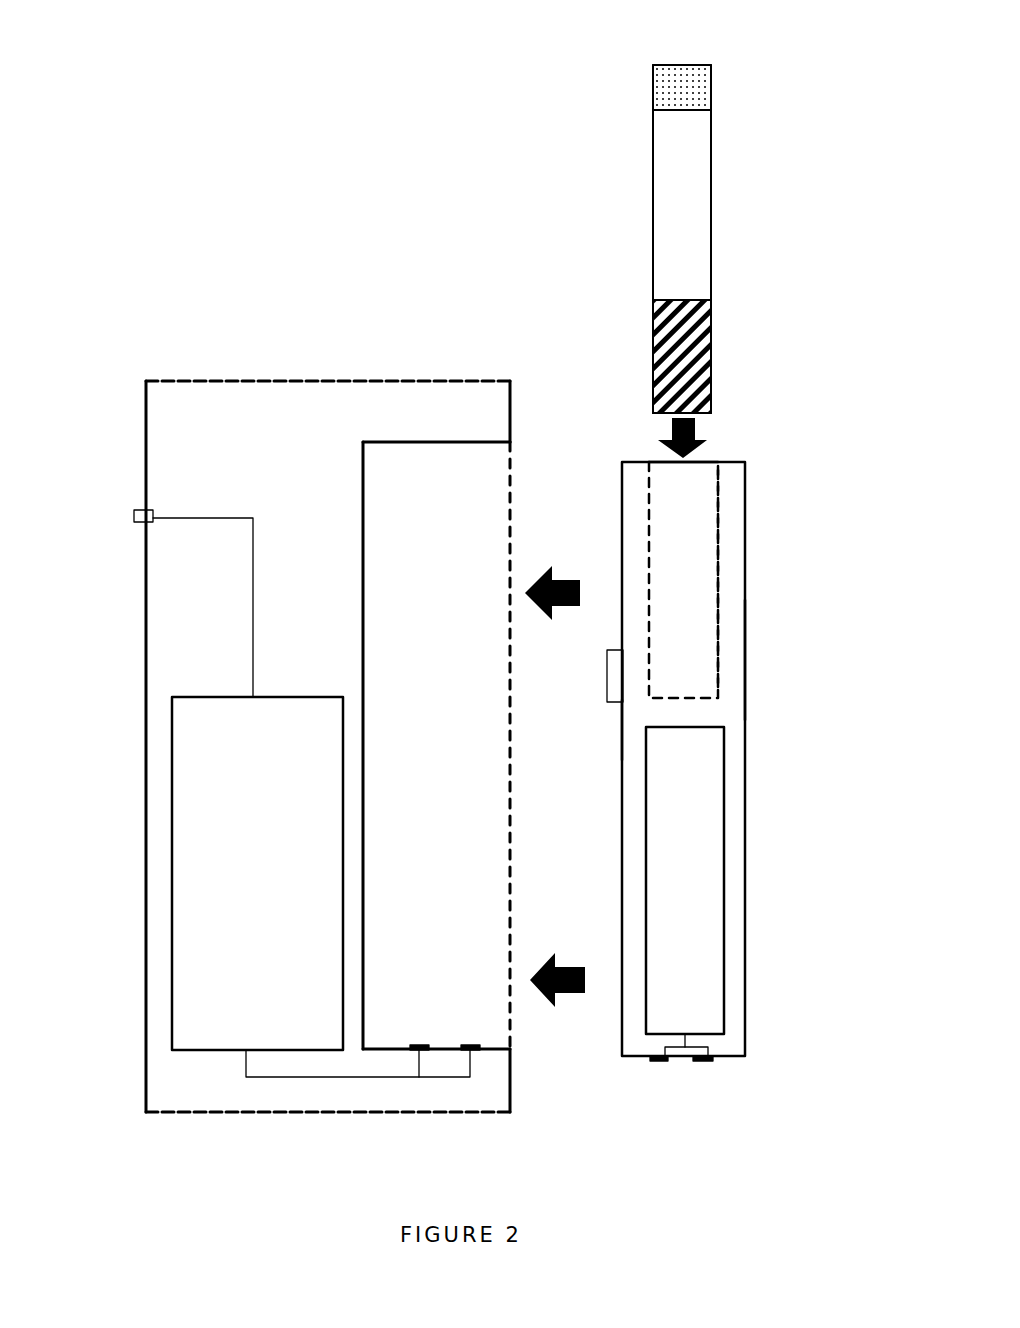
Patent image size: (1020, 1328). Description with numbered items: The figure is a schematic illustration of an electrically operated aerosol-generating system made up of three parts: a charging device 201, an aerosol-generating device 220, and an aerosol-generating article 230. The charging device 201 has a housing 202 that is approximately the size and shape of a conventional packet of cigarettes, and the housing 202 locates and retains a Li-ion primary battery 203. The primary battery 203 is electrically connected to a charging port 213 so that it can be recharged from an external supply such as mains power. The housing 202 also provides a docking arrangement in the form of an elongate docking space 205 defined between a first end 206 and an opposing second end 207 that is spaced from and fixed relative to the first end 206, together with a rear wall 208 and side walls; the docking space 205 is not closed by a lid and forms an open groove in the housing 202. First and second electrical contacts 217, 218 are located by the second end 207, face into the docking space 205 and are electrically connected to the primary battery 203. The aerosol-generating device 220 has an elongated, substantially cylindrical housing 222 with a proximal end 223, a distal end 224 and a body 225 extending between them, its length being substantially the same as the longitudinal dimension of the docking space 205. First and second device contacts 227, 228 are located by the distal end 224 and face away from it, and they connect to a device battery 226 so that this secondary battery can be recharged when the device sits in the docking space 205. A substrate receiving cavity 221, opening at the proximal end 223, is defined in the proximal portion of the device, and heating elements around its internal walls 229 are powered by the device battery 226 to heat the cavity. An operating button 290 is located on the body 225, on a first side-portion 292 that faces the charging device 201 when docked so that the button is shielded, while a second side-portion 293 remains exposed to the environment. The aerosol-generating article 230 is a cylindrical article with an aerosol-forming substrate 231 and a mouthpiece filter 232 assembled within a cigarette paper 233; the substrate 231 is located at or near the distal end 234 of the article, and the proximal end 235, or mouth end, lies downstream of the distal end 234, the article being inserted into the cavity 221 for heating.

The charging device 201 is at (138, 370).
The housing 202 is at (146, 406).
The primary battery 203 is at (257, 873).
The docking space 205 is at (436, 745).
The first end 206 is at (487, 446).
The second end 207 is at (502, 1050).
The rear wall 208 is at (363, 552).
The charging port 213 is at (136, 521).
The first electrical contact 217 is at (419, 1045).
The second electrical contact 218 is at (467, 1045).
The aerosol-generating device 220 is at (814, 484).
The substrate receiving cavity 221 is at (698, 554).
The elongated housing 222 is at (745, 944).
The proximal end 223 is at (739, 462).
The distal end 224 is at (732, 1058).
The body 225 is at (724, 710).
The device battery 226 is at (695, 817).
The first device contact 227 is at (654, 1066).
The second device contact 228 is at (705, 1066).
The internal walls 229 is at (721, 616).
The aerosol-generating article 230 is at (768, 99).
The aerosol-forming substrate 231 is at (711, 334).
The mouthpiece filter 232 is at (653, 92).
The cigarette paper 233 is at (714, 212).
The distal end 234 is at (708, 414).
The proximal end 235 is at (682, 65).
The operating button 290 is at (607, 678).
The first side-portion 292 is at (618, 729).
The second side-portion 293 is at (750, 659).